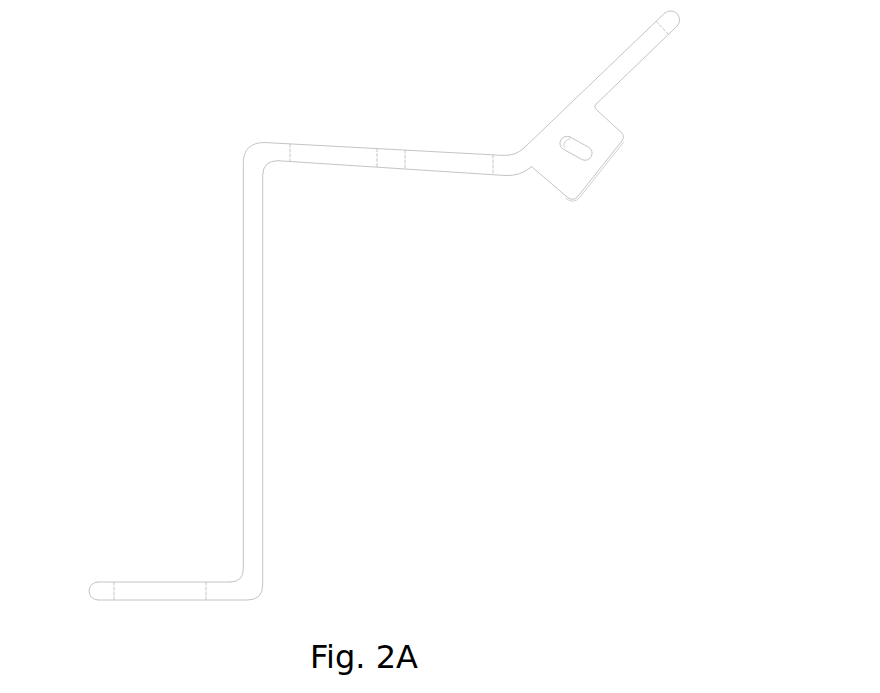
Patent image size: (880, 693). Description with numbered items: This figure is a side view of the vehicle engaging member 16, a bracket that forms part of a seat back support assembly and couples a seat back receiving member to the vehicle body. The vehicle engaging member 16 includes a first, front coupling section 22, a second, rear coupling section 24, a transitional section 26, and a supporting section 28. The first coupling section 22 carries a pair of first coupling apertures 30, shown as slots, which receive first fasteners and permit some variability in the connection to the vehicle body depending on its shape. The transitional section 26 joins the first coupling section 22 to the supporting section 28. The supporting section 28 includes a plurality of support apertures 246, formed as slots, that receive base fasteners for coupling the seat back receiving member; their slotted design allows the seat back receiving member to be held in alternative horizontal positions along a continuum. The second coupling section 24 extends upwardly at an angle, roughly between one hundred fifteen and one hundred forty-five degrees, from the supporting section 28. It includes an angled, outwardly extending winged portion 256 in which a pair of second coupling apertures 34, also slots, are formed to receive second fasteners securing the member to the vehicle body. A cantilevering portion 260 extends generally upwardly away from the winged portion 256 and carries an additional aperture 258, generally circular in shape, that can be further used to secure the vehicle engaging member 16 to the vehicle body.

The vehicle engaging member 16 is at (411, 305).
The first coupling section 22 is at (100, 587).
The first coupling apertures 30 is at (155, 587).
The transitional section 26 is at (253, 463).
The support apertures 246 is at (318, 152).
The supporting section 28 is at (392, 160).
The cantilevering portion 260 is at (623, 55).
The second coupling section 24 is at (607, 80).
The additional aperture 258 is at (665, 28).
The winged portion 256 is at (562, 182).
The second coupling apertures 34 is at (578, 158).